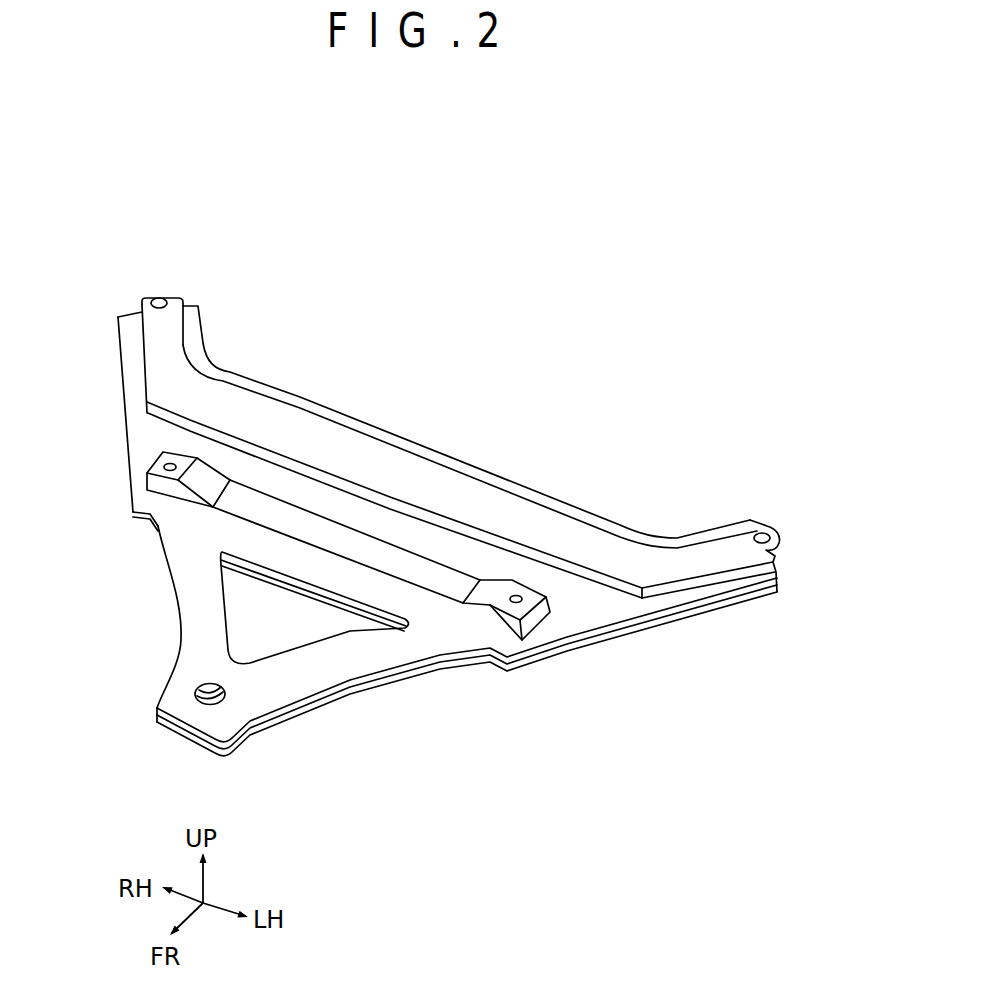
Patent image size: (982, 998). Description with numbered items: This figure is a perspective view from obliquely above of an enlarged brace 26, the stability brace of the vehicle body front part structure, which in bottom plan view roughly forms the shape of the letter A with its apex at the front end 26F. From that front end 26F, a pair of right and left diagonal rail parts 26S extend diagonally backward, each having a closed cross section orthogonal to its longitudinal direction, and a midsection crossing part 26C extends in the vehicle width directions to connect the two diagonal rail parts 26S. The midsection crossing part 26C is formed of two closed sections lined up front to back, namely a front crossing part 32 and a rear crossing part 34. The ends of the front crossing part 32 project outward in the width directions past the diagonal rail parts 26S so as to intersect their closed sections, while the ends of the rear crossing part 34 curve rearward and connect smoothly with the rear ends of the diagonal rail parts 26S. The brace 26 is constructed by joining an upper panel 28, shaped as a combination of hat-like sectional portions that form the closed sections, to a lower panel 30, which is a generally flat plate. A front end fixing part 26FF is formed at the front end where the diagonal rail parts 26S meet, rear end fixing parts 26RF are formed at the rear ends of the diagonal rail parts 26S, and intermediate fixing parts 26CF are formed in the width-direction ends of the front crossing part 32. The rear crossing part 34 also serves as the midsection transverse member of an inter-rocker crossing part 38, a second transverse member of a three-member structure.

The brace 26 is at (369, 270).
The midsection crossing part 26C is at (547, 377).
The rear end fixing part 26RF is at (160, 297).
The intermediate fixing part 26CF is at (170, 467).
The diagonal rail part 26S is at (148, 443).
The front end 26F is at (177, 730).
The front end fixing part 26FF is at (222, 682).
The upper panel 28 is at (345, 661).
The lower panel 30 is at (323, 703).
The front crossing part 32 is at (305, 500).
The rear crossing part 34 is at (461, 471).
The inter-rocker crossing part 38 is at (414, 477).